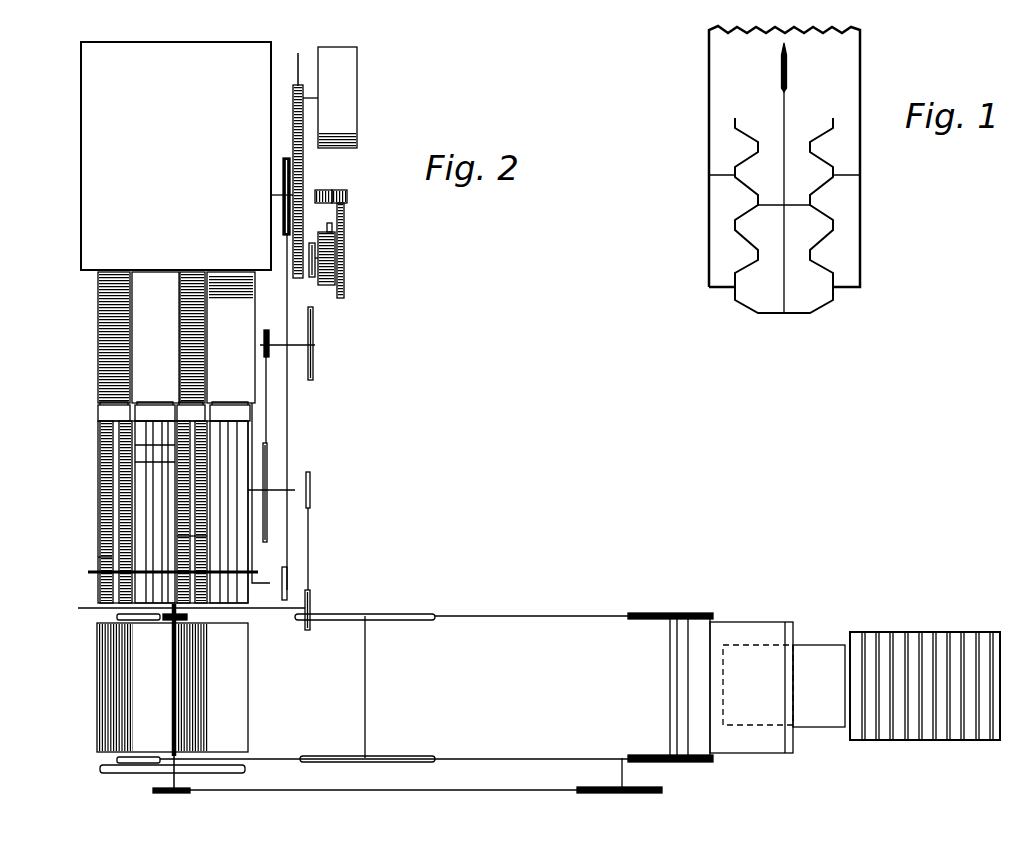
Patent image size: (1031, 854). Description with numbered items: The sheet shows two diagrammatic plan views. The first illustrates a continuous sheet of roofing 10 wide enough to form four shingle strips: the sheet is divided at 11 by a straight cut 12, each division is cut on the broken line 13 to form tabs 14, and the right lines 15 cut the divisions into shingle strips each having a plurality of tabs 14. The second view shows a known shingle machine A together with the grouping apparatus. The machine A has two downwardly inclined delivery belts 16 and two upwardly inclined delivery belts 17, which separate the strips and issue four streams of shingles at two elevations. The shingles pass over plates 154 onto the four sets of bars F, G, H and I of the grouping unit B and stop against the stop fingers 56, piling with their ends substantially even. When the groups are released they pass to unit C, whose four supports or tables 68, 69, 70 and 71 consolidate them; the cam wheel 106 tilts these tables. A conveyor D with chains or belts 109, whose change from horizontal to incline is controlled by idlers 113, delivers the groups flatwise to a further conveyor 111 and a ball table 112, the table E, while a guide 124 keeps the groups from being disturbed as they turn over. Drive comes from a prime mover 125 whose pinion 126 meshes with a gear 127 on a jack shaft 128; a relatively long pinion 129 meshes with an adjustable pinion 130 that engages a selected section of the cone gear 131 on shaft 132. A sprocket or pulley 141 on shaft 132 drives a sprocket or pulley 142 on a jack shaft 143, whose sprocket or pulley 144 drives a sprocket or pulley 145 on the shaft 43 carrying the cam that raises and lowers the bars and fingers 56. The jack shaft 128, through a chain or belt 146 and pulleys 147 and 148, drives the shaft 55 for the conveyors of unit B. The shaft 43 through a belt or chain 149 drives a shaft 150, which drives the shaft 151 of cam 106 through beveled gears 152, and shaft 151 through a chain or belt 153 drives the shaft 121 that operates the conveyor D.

In FIG. 1, the continuous sheet of roofing 10 is at (852, 50).
In FIG. 1, the division point 11 is at (780, 58).
In FIG. 1, the straight cut 12 is at (784, 118).
In FIG. 1, the broken line 13 is at (760, 150).
In FIG. 1, the tabs 14 is at (760, 255).
In FIG. 1, the right lines 15 is at (762, 200).
In FIG. 2, the shingle machine A is at (125, 130).
In FIG. 2, the grouping unit B is at (98, 487).
In FIG. 2, the consolidating unit C is at (97, 721).
In FIG. 2, the conveyor D is at (489, 641).
In FIG. 2, the table E is at (920, 637).
In FIG. 2, the first set of bars F is at (213, 452).
In FIG. 2, the second set of bars G is at (153, 461).
In FIG. 2, the third set of bars H is at (183, 536).
In FIG. 2, the fourth set of bars I is at (100, 557).
In FIG. 2, the downwardly inclined delivery belts 16 is at (195, 330).
In FIG. 2, the upwardly inclined delivery belts 17 is at (193, 337).
In FIG. 2, the cam wheel shaft 43 is at (295, 488).
In FIG. 2, the conveyor drive shaft 55 is at (270, 580).
In FIG. 2, the stop fingers 56 is at (98, 576).
In FIG. 2, the support table 68 is at (140, 640).
In FIG. 2, the support table 69 is at (215, 665).
In FIG. 2, the support table 70 is at (118, 674).
In FIG. 2, the support table 71 is at (188, 692).
In FIG. 2, the cam wheel 106 is at (245, 770).
In FIG. 2, the chains or belts 109 is at (535, 615).
In FIG. 2, the conveyor 111 is at (823, 645).
In FIG. 2, the ball table 112 is at (972, 632).
In FIG. 2, the idlers 113 is at (418, 613).
In FIG. 2, the conveyor shaft 121 is at (615, 758).
In FIG. 2, the guide 124 is at (758, 622).
In FIG. 2, the prime mover 125 is at (350, 72).
In FIG. 2, the pinion 126 is at (297, 57).
In FIG. 2, the gear 127 is at (293, 140).
In FIG. 2, the jack shaft 128 is at (313, 192).
In FIG. 2, the long pinion 129 is at (333, 191).
In FIG. 2, the adjustable pinion 130 is at (347, 215).
In FIG. 2, the cone gear 131 is at (338, 250).
In FIG. 2, the cone gear shaft 132 is at (347, 259).
In FIG. 2, the sprocket or pulley 141 is at (312, 278).
In FIG. 2, the sprocket or pulley 142 is at (315, 333).
In FIG. 2, the jack shaft 143 is at (313, 357).
In FIG. 2, the sprocket or pulley 144 is at (269, 357).
In FIG. 2, the sprocket or pulley 145 is at (268, 458).
In FIG. 2, the chain or belt 146 is at (287, 400).
In FIG. 2, the pulley or sprocket 147 is at (288, 572).
In FIG. 2, the pulley or sprocket 148 is at (283, 178).
In FIG. 2, the belt or chain 149 is at (308, 517).
In FIG. 2, the shaft 150 is at (272, 622).
In FIG. 2, the cam shaft 151 is at (170, 784).
In FIG. 2, the beveled gears 152 is at (78, 608).
In FIG. 2, the chain or belt 153 is at (470, 787).
In FIG. 2, the plates 154 is at (125, 400).